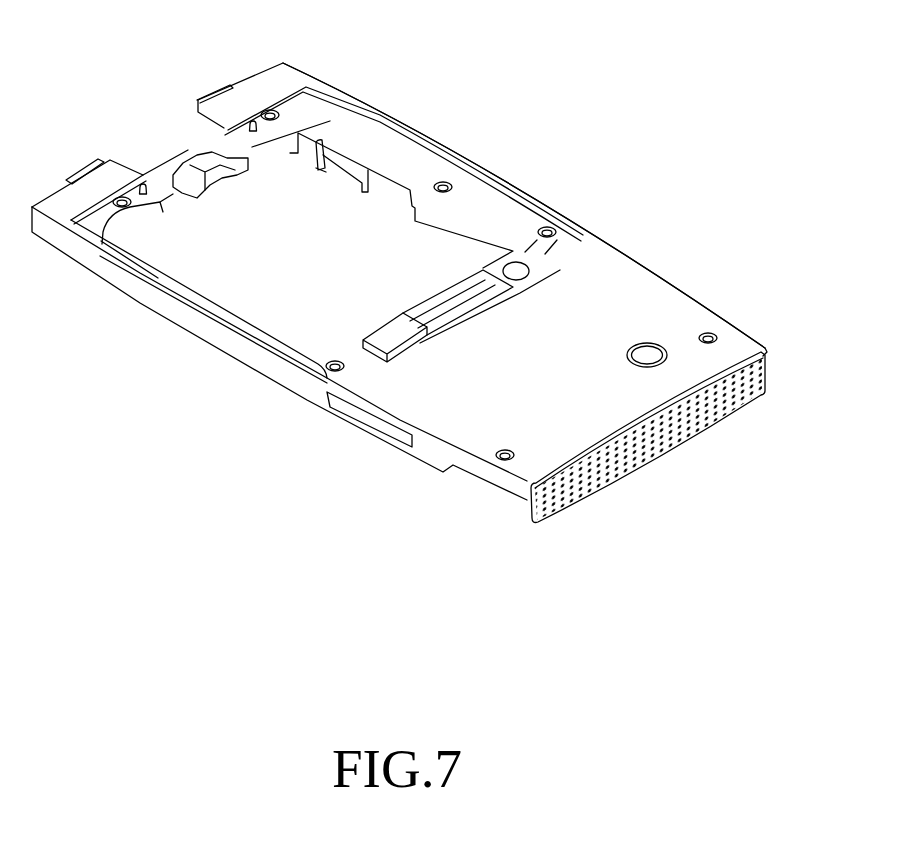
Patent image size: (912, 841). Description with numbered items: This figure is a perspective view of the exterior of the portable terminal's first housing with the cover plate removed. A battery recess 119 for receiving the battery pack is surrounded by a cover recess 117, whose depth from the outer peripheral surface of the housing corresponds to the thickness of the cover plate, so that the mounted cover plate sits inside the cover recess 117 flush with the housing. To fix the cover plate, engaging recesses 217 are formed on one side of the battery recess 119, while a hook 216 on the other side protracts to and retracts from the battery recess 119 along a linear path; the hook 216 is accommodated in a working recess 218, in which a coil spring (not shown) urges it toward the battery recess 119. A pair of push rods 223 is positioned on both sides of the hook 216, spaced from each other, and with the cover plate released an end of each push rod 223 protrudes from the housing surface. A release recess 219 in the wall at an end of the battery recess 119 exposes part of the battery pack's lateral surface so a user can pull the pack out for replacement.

The cover recess 117 is at (400, 147).
The battery recess 119 is at (432, 258).
The hook 216 is at (194, 173).
The engaging recesses 217 is at (376, 363).
The working recess 218 is at (280, 178).
The release recess 219 is at (130, 223).
The push rods 223 is at (143, 187).